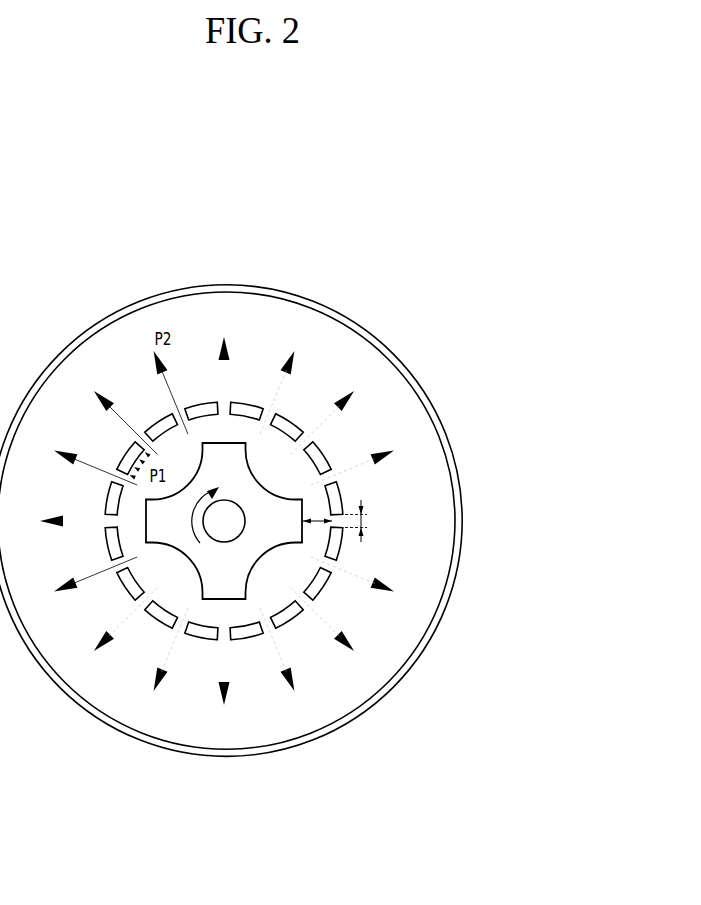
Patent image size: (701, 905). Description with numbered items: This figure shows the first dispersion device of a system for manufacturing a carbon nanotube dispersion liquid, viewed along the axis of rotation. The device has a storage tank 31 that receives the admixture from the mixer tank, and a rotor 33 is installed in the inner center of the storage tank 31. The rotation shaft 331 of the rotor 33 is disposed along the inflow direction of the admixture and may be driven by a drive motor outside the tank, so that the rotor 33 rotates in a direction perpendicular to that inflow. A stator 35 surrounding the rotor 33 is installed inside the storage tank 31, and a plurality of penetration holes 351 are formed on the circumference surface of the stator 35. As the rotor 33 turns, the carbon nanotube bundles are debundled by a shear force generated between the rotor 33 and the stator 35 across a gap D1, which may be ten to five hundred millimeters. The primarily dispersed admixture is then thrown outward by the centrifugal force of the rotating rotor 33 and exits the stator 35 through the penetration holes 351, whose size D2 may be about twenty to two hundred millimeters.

The storage tank 31 is at (233, 285).
The rotor 33 is at (210, 585).
The rotation shaft 331 is at (242, 535).
The stator 35 is at (247, 400).
The penetration holes 351 is at (268, 619).
The gap D1 is at (318, 515).
The size of the penetration holes D2 is at (362, 517).